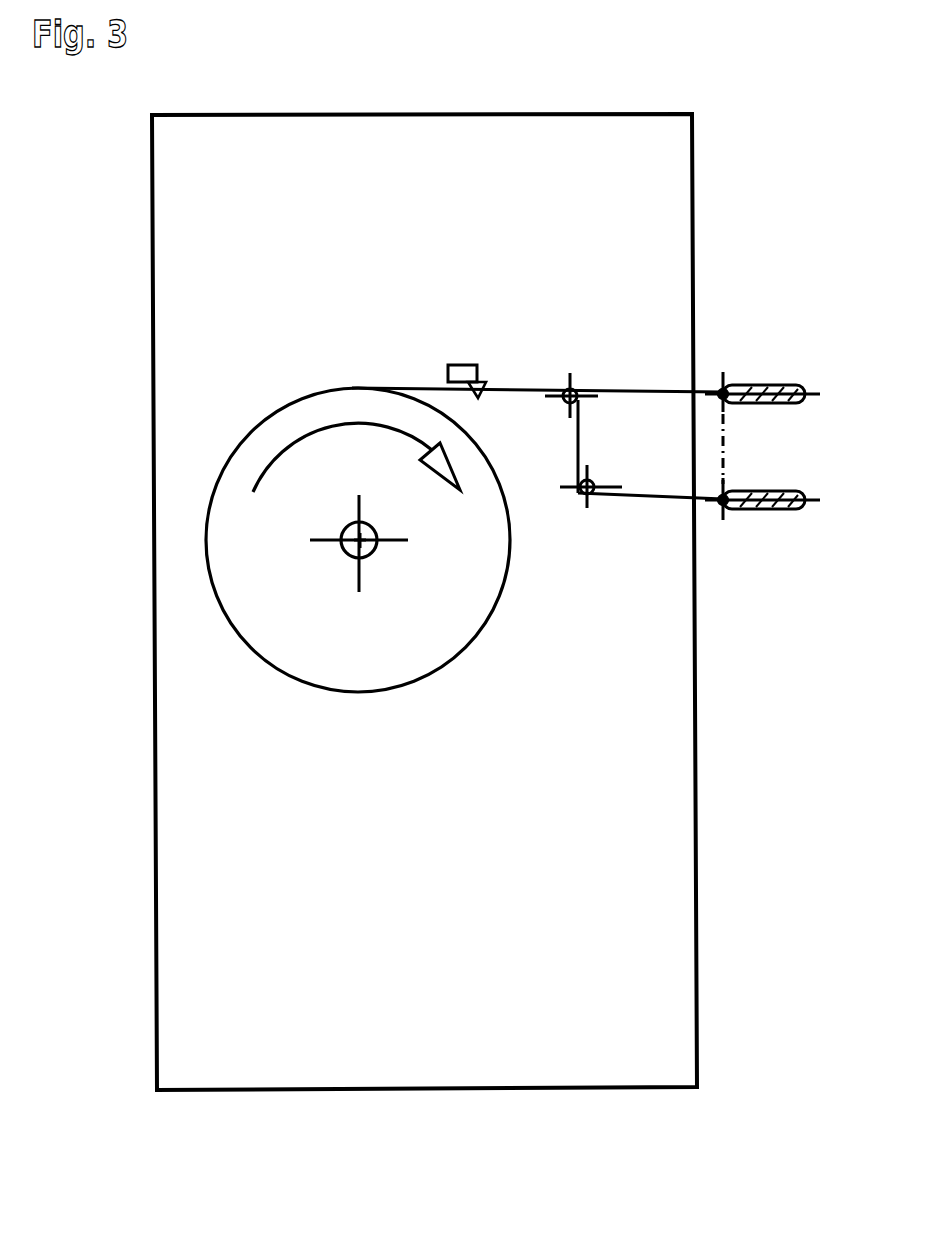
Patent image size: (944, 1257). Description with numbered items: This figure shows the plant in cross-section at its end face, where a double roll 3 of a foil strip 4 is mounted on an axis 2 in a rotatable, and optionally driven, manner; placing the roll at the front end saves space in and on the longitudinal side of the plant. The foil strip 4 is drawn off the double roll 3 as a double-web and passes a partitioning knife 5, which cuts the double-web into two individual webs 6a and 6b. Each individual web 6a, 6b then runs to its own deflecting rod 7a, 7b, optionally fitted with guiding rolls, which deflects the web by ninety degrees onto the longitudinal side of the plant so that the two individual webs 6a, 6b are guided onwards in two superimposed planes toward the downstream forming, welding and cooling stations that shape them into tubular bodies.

The axis 2 is at (343, 556).
The double roll 3 is at (396, 657).
The foil strip 4 is at (418, 388).
The partitioning knife 5 is at (470, 366).
The individual web 6a is at (620, 388).
The individual web 6b is at (638, 493).
The deflecting rod 7a is at (795, 385).
The deflecting rod 7b is at (795, 491).